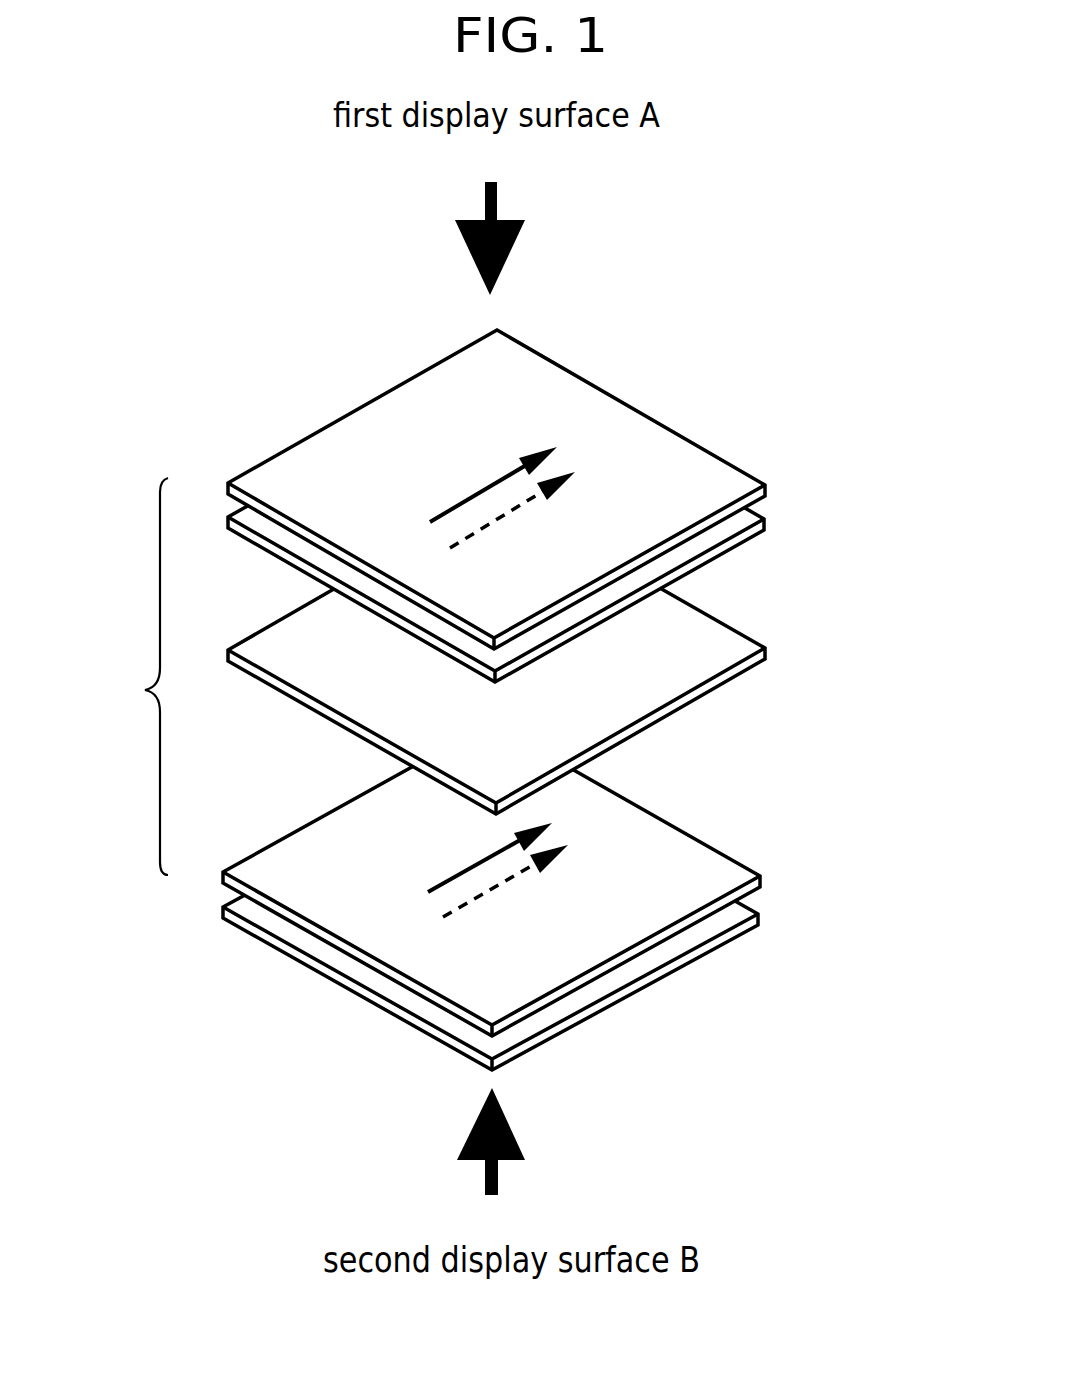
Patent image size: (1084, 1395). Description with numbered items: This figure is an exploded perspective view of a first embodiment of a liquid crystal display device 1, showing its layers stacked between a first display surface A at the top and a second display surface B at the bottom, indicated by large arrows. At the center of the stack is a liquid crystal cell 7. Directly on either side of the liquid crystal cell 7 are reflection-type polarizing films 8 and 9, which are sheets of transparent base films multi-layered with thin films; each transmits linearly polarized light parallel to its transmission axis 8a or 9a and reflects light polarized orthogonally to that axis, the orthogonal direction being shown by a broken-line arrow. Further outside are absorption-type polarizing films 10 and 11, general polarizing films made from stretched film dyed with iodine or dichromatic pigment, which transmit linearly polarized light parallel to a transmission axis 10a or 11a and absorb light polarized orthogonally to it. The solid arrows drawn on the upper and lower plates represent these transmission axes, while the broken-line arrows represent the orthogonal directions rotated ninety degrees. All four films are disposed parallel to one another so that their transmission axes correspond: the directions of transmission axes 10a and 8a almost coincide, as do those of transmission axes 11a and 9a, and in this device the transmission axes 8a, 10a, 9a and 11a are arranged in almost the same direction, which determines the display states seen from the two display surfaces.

The liquid crystal display device 1 is at (146, 676).
The liquid crystal cell 7 is at (723, 640).
The reflection-type polarizing film 8 is at (743, 523).
The transmission axis 8a is at (517, 507).
The reflection-type polarizing film 9 is at (715, 858).
The transmission axis 9a is at (473, 863).
The absorption-type polarizing film 10 is at (717, 473).
The transmission axis 10a is at (495, 477).
The absorption-type polarizing film 11 is at (722, 920).
The transmission axis 11a is at (493, 890).